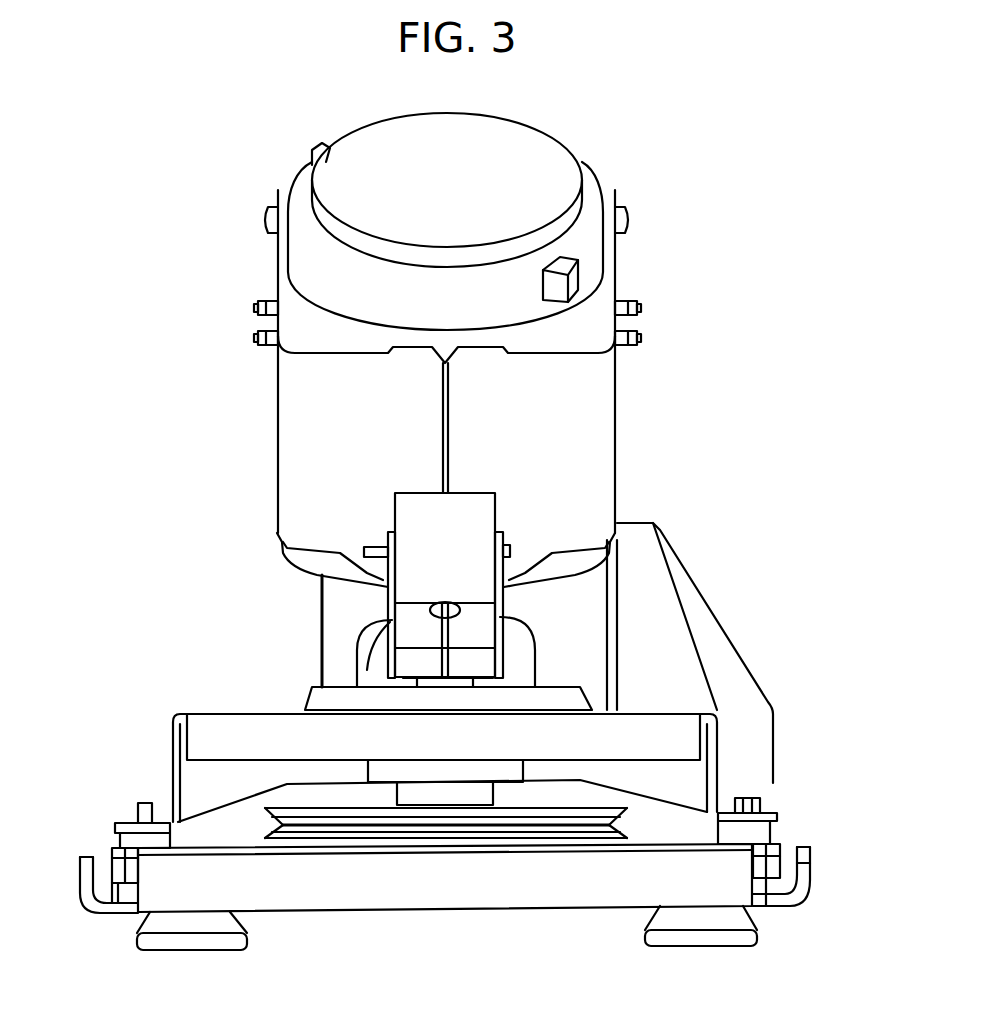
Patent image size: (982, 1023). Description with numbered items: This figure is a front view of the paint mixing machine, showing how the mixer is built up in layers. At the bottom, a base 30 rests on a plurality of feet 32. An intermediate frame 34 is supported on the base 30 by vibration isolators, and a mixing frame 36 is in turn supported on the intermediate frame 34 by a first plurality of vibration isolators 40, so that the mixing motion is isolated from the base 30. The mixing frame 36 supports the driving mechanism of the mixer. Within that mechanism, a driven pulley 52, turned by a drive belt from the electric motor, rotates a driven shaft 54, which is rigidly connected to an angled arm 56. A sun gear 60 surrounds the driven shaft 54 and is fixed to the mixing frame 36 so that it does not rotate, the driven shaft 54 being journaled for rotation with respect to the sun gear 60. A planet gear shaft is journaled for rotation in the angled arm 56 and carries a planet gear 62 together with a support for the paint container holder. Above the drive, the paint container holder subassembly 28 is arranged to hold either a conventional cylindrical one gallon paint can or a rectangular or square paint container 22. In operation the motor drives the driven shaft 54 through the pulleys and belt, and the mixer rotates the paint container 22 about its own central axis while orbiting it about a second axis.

The paint container 22 is at (598, 170).
The paint container holder subassembly 28 is at (624, 419).
The base 30 is at (290, 912).
The feet 32 is at (172, 951).
The intermediate frame 34 is at (110, 848).
The mixing frame 36 is at (250, 713).
The first plurality of vibration isolators 40 is at (177, 837).
The driven pulley 52 is at (627, 806).
The driven shaft 54 is at (430, 838).
The angled arm 56 is at (503, 610).
The sun gear 60 is at (307, 703).
The planet gear 62 is at (533, 658).